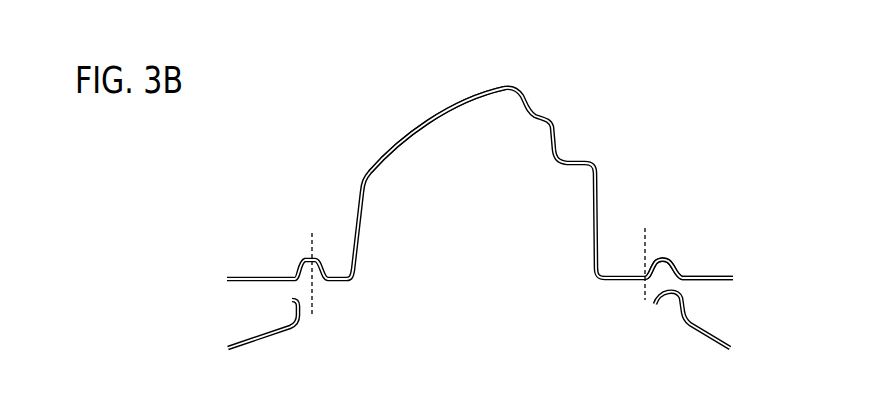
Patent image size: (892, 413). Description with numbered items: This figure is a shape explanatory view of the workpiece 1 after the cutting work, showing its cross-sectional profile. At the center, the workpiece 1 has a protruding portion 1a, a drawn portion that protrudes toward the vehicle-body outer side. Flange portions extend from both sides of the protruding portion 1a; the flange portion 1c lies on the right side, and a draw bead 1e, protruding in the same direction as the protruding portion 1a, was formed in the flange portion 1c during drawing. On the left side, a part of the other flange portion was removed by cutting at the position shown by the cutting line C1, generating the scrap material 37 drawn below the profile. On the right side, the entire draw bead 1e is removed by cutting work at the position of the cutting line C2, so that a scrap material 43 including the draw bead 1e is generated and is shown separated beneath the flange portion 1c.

The workpiece 1 is at (517, 85).
The protruding portion 1a is at (465, 98).
The flange portion 1c is at (722, 277).
The draw bead 1e is at (663, 258).
The scrap material 37 is at (255, 330).
The scrap material 43 is at (699, 333).
The cutting line C1 is at (313, 258).
The cutting line C2 is at (652, 248).